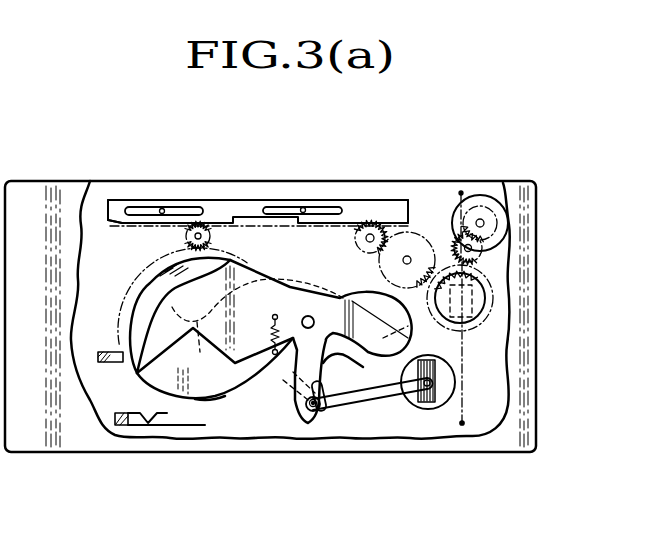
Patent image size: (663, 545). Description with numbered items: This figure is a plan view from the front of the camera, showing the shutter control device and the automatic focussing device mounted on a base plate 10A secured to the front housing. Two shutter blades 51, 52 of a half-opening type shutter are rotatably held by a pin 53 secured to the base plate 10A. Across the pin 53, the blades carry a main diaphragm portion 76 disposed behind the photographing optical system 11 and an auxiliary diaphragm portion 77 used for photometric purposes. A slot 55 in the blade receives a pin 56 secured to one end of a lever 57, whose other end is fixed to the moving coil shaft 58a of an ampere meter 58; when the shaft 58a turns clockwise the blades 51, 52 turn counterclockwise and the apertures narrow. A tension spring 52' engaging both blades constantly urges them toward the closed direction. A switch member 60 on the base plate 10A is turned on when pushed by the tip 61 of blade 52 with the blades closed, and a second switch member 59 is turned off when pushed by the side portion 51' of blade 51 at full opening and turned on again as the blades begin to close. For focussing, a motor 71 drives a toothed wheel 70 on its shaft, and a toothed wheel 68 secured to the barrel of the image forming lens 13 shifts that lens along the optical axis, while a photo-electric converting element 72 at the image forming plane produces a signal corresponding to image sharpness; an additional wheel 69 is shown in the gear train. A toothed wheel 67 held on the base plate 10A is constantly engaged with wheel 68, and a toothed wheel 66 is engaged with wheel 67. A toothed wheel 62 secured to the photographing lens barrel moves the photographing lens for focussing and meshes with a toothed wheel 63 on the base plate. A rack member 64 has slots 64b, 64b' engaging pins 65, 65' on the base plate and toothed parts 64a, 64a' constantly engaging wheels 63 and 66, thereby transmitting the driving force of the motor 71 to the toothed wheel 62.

The base plate 10A is at (70, 440).
The photographing optical system 11 is at (157, 290).
The image forming lens 13 is at (472, 316).
The shutter blade 51 is at (215, 381).
The side portion of the shutter blade 51' is at (212, 442).
The shutter blade 52 is at (274, 341).
The tension spring 52' is at (257, 281).
The pin 53 is at (312, 318).
The slot 55 is at (296, 392).
The pin 56 is at (313, 411).
The lever 57 is at (388, 389).
The ampere meter 58 is at (443, 393).
The moving coil shaft 58a is at (440, 385).
The switch member 59 is at (137, 427).
The switch member 60 is at (118, 362).
The tip of the shutter blade 61 is at (148, 420).
The toothed wheel 62 is at (132, 296).
The toothed wheel 63 is at (205, 223).
The rack member 64 is at (253, 207).
The toothed part 64a is at (108, 184).
The toothed part 64a' is at (384, 175).
The slot 64b is at (227, 180).
The slot 64b' is at (325, 184).
The pin 65 is at (180, 179).
The pin 65' is at (324, 170).
The toothed wheel 66 is at (381, 226).
The toothed wheel 67 is at (416, 254).
The toothed wheel 68 is at (490, 303).
The gear 69 is at (471, 257).
The toothed wheel 70 is at (484, 219).
The motor 71 is at (485, 197).
The photo-electric converting element 72 is at (480, 293).
The main diaphragm portion 76 is at (198, 338).
The auxiliary diaphragm portion 77 is at (380, 343).